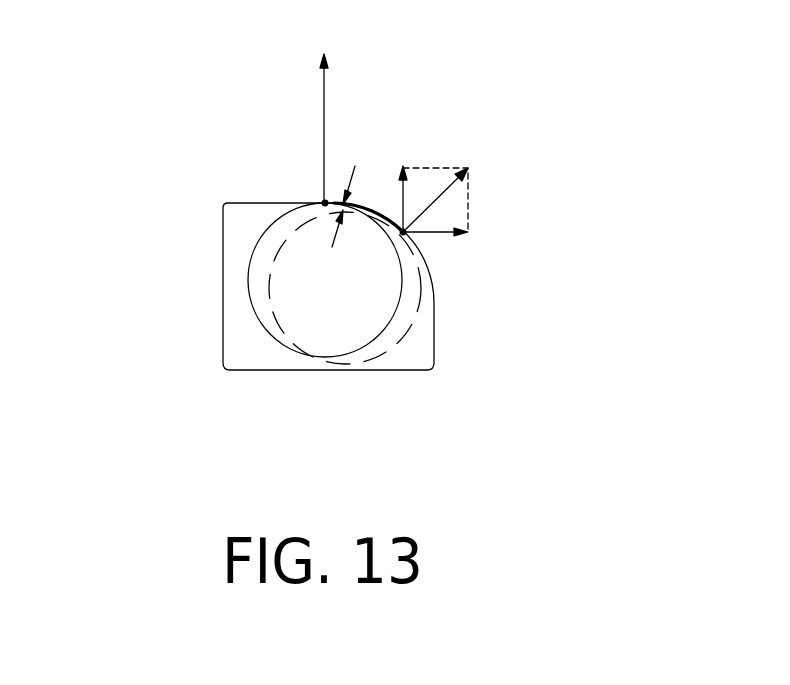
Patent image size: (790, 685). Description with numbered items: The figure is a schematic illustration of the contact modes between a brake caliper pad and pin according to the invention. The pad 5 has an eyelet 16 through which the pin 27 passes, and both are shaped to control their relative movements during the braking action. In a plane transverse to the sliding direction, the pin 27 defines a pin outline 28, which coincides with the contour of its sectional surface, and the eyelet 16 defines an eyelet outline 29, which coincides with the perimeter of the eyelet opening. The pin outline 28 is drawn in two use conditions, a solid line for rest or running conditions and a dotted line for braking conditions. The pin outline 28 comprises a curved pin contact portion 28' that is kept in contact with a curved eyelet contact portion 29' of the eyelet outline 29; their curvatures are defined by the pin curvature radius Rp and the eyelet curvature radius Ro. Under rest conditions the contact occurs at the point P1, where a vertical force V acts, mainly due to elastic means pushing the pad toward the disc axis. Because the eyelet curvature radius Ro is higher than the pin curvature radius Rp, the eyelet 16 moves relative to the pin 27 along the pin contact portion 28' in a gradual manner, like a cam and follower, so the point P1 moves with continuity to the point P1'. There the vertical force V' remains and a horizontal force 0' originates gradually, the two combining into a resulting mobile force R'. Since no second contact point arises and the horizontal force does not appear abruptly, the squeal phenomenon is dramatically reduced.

The pad 5 is at (260, 203).
The eyelet 16 is at (240, 343).
The pin 27 is at (263, 255).
The pin outline 28 is at (290, 321).
The eyelet outline 29 is at (457, 263).
The contact point P1 is at (284, 136).
The displaced contact point P1' is at (460, 261).
The vertical force V is at (322, 112).
The vertical force at displaced contact point V' is at (406, 178).
The resulting mobile force R' is at (449, 178).
The horizontal force 0' is at (452, 233).
The eyelet curvature radius Ro is at (354, 174).
The pin curvature radius Rp is at (332, 242).
The pin contact portion 28' is at (390, 149).
The eyelet contact portion 29' is at (437, 134).